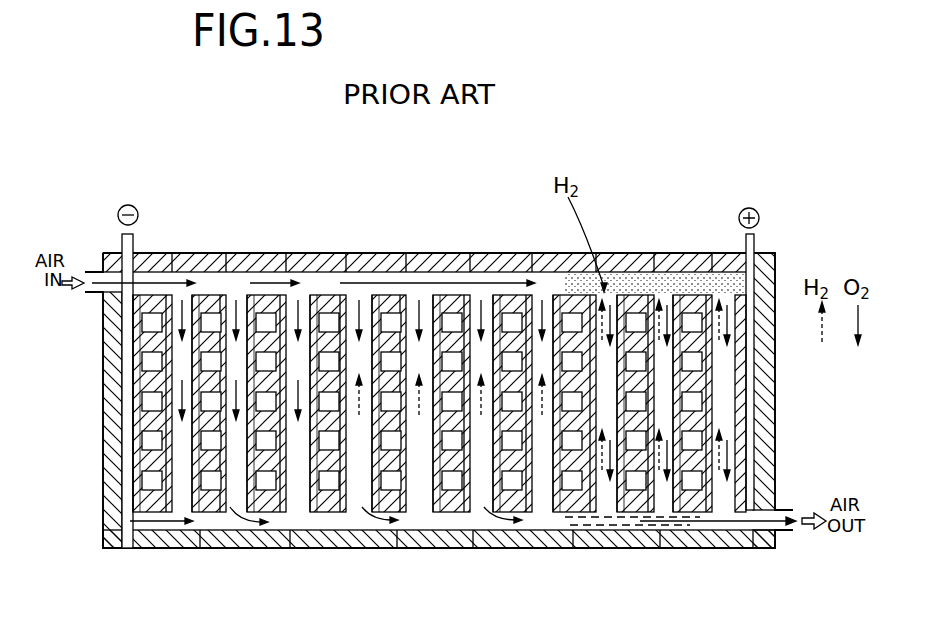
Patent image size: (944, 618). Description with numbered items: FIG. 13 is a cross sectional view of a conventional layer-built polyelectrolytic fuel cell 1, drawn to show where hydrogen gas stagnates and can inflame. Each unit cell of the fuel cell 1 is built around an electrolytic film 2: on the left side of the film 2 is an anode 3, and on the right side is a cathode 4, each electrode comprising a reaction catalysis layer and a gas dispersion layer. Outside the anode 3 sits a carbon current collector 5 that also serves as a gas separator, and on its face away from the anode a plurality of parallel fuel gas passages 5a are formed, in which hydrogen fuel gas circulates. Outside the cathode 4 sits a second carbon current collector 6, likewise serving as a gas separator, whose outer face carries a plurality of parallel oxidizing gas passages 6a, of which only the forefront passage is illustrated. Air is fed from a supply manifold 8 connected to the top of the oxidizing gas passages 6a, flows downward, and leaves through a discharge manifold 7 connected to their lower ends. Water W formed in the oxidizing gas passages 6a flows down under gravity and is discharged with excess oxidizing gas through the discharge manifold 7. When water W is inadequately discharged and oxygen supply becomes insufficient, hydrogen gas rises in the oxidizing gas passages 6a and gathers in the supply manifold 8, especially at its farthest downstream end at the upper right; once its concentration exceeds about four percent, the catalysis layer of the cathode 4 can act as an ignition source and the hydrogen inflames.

The polyelectrolytic fuel cell 1 is at (336, 230).
The electrolytic film 2 is at (165, 512).
The anode 3 is at (147, 500).
The cathode 4 is at (182, 485).
The carbon current collector 5 is at (384, 297).
The fuel gas passage 5a is at (212, 326).
The carbon current collector 6 is at (248, 545).
The oxidizing gas passage 6a is at (203, 480).
The discharge manifold 7 is at (457, 519).
The supply manifold 8 is at (548, 256).
The water W is at (732, 527).